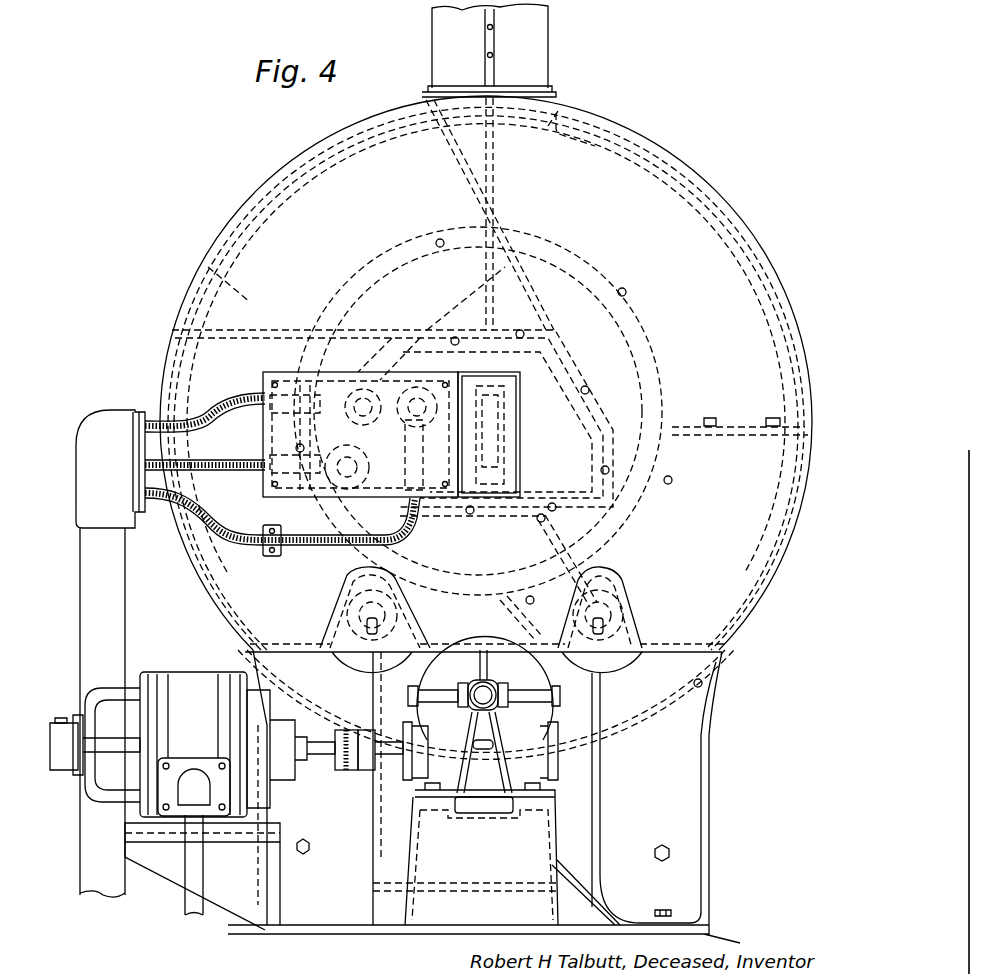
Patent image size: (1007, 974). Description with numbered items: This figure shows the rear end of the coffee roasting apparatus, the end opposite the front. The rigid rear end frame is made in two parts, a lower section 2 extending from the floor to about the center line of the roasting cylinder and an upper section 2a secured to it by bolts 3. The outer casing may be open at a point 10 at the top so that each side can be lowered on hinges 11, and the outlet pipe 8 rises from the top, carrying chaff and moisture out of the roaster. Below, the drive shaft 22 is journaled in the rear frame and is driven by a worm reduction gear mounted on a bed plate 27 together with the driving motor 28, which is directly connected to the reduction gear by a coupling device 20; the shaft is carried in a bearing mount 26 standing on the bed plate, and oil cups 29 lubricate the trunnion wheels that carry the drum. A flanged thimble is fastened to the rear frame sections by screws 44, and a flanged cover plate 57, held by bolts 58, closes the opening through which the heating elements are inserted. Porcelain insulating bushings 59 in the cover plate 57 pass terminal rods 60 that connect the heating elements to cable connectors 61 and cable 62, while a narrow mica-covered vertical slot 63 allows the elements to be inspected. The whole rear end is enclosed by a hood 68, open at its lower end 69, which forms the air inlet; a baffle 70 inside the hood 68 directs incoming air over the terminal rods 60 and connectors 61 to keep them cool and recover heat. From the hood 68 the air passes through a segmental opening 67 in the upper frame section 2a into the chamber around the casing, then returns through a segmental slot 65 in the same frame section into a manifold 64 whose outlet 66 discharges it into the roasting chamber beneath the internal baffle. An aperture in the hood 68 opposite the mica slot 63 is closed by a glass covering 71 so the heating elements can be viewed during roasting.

The lower section of rear end frame 2 is at (703, 742).
The upper section of rear end frame 2a is at (565, 110).
The bolts 3 is at (712, 418).
The outlet pipe 8 is at (434, 54).
The opening point of casing 10 is at (486, 92).
The hinges 11 is at (275, 676).
The coupling device 20 is at (350, 772).
The drive shaft 22 is at (490, 690).
The bearing mount 26 is at (418, 682).
The bed plate 27 is at (156, 868).
The driving motor 28 is at (194, 680).
The oil cups 29 is at (481, 620).
The screws 44 is at (440, 240).
The flanged cover plate 57 is at (578, 372).
The bolts 58 is at (592, 393).
The porcelain insulating bushings 59 is at (381, 438).
The terminal rods 60 is at (384, 382).
The cable connectors 61 is at (357, 437).
The cable 62 is at (200, 432).
The vertical slot 63 is at (508, 414).
The manifold 64 is at (210, 275).
The segmental slot 65 is at (230, 230).
The outlet 66 is at (468, 318).
The segmental opening 67 is at (672, 196).
The hood 68 is at (777, 350).
The lower end of hood 69 is at (541, 655).
The baffle 70 is at (540, 524).
The glass covering 71 is at (500, 480).